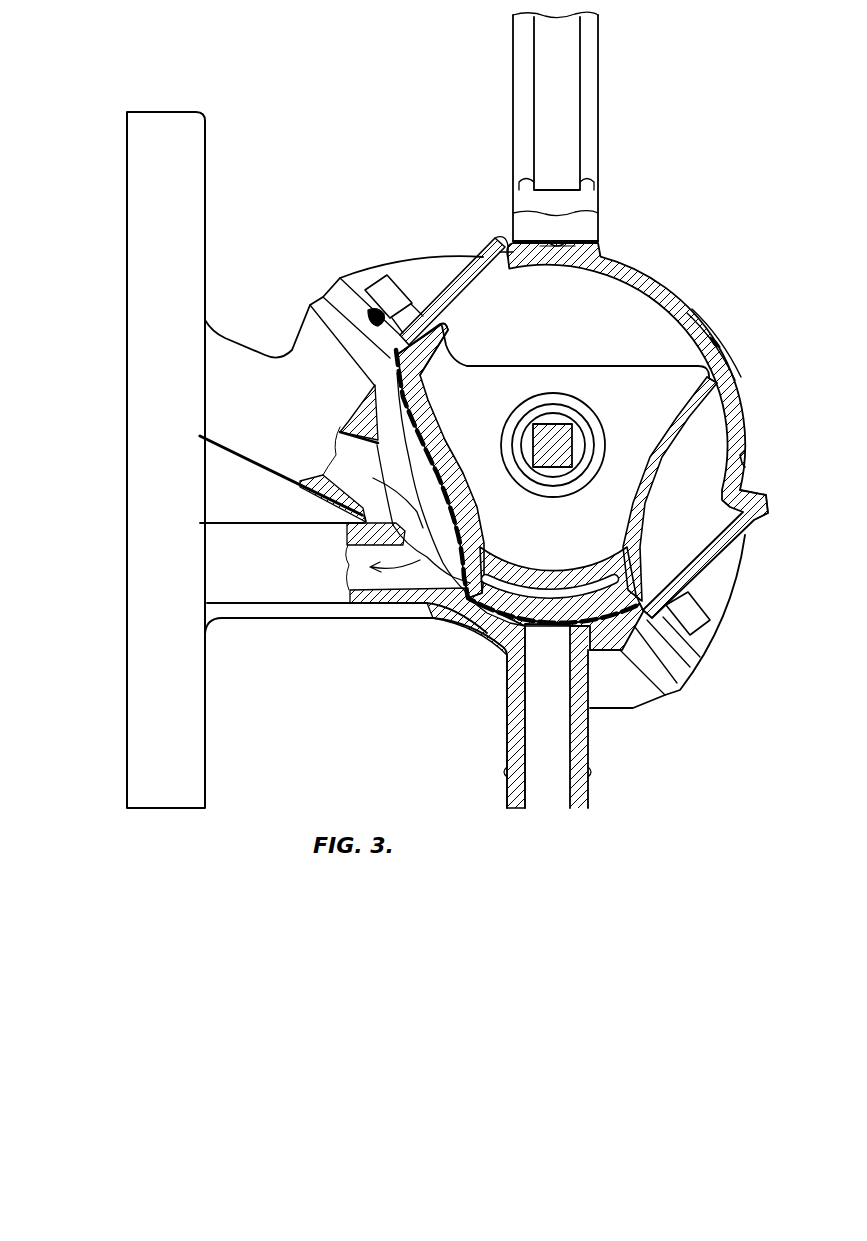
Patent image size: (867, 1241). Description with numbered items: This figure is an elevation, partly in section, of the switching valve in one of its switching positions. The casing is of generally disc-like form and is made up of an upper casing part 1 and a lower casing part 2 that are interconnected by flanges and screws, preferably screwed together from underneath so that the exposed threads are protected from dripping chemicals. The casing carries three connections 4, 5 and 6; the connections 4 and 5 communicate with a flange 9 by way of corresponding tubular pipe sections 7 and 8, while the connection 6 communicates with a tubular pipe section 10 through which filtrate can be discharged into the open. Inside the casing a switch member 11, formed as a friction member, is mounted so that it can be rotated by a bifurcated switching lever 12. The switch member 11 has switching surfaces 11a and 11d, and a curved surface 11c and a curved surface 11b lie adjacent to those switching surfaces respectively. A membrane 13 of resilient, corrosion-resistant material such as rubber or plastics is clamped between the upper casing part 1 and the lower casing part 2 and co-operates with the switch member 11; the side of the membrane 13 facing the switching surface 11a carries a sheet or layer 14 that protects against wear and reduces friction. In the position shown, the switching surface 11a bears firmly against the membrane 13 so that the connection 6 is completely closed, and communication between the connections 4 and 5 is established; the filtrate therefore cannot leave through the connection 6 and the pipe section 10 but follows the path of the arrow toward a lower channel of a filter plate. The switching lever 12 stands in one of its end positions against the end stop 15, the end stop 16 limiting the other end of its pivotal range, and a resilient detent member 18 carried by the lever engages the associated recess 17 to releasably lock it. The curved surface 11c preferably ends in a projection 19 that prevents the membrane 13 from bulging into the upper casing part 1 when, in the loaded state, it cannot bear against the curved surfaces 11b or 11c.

The upper casing part 1 is at (652, 284).
The lower casing part 2 is at (433, 627).
The connection 4 is at (373, 478).
The connection 5 is at (412, 592).
The connection 6 is at (528, 630).
The tubular pipe section 7 is at (250, 382).
The tubular pipe section 8 is at (254, 578).
The flange 9 is at (168, 748).
The tubular pipe section 10 is at (530, 722).
The switch member 11 is at (587, 377).
The switching surface 11a is at (590, 613).
The curved surface 11b is at (440, 470).
The curved surface 11c is at (655, 463).
The switching surface 11d is at (447, 348).
The bifurcated switching lever 12 is at (565, 122).
The membrane 13 is at (450, 540).
The sheet or layer 14 is at (413, 425).
The end stop 15 is at (518, 243).
The end stop 16 is at (750, 500).
The recess 17 is at (563, 266).
The resilient detent member 18 is at (560, 244).
The projection 19 is at (702, 389).